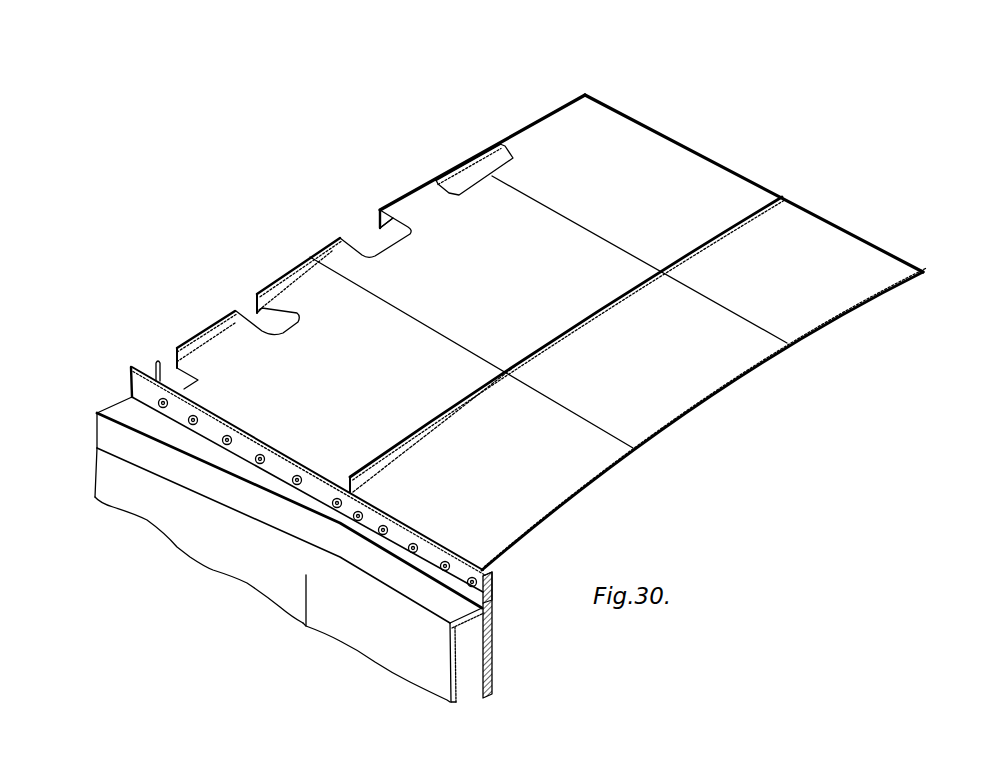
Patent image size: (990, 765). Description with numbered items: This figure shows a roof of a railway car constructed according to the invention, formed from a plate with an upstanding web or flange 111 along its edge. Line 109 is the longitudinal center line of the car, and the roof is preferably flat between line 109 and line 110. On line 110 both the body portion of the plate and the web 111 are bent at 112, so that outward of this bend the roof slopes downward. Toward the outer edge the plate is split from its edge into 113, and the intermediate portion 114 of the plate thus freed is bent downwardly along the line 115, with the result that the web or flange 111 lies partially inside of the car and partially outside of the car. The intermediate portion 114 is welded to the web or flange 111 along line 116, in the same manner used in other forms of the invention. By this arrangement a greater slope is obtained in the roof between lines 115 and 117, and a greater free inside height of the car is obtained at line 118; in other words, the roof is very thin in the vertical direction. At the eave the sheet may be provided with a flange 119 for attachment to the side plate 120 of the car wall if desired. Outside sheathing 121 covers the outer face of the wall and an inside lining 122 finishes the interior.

The longitudinal center line 109 is at (585, 96).
The line 110 is at (704, 373).
The web or flange 111 is at (458, 163).
The bend 112 is at (458, 151).
The split 113 is at (311, 257).
The intermediate portion of the plate 114 is at (294, 307).
The line 115 is at (436, 331).
The weld line 116 is at (216, 313).
The line 117 is at (262, 442).
The line 118 is at (485, 572).
The flange 119 is at (489, 596).
The side plate 120 is at (465, 622).
The outside sheathing 121 is at (437, 692).
The inside lining 122 is at (493, 686).